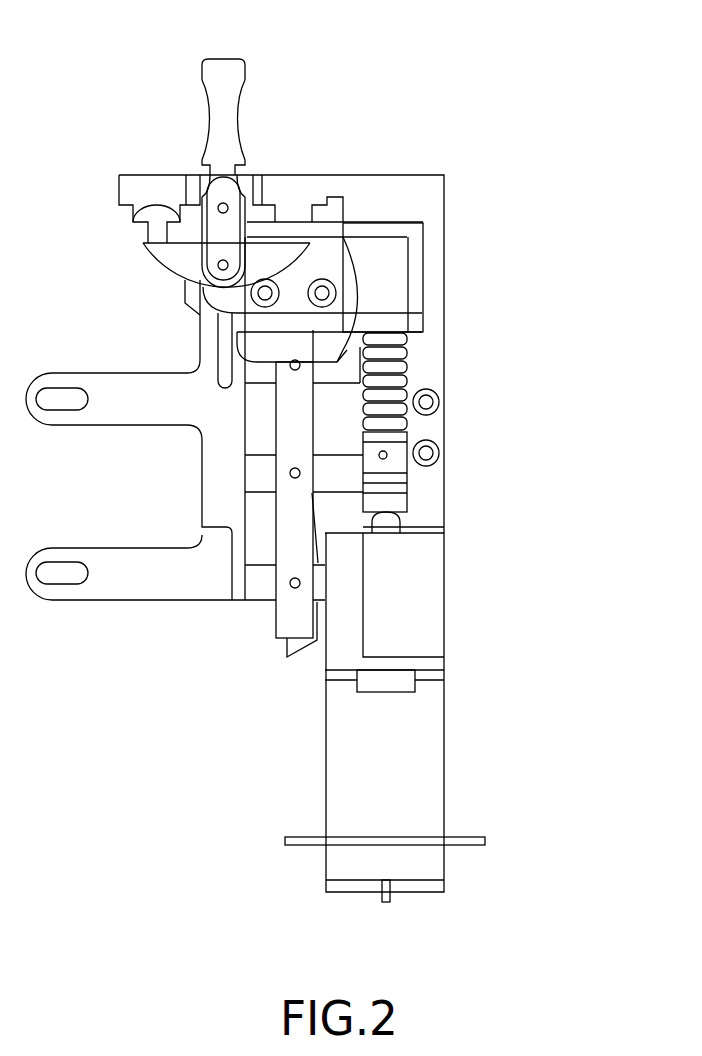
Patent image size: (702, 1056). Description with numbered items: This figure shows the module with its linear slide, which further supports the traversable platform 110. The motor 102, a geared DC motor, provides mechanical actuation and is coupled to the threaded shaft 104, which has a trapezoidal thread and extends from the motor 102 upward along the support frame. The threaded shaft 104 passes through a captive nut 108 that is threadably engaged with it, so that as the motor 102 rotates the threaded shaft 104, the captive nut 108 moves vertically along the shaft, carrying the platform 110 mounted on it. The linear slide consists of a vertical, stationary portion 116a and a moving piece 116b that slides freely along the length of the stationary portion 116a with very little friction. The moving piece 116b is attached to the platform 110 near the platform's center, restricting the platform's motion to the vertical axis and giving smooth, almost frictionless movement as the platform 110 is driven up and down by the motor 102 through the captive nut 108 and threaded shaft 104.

The motor 102 is at (413, 748).
The threaded shaft 104 is at (428, 390).
The captive nut 108 is at (462, 303).
The traversable platform 110 is at (412, 265).
The stationary portion of the linear slide 116a is at (283, 529).
The moving piece of the linear slide 116b is at (328, 243).